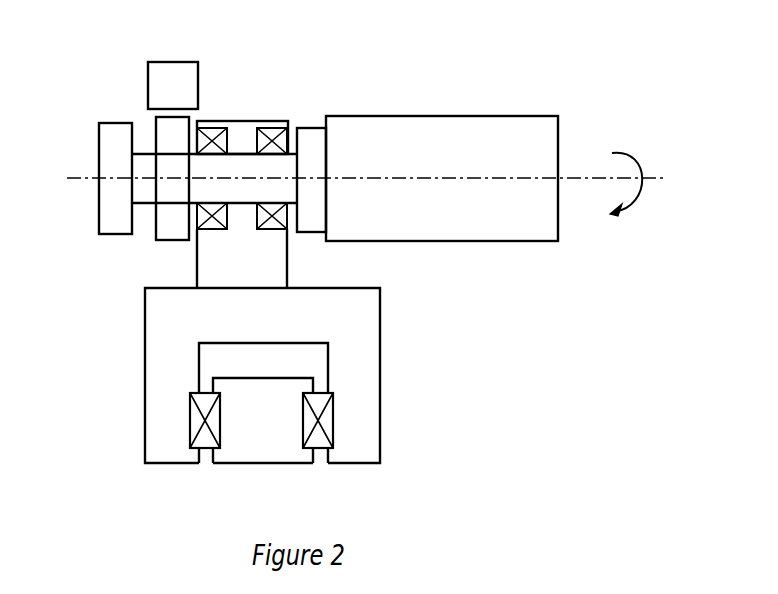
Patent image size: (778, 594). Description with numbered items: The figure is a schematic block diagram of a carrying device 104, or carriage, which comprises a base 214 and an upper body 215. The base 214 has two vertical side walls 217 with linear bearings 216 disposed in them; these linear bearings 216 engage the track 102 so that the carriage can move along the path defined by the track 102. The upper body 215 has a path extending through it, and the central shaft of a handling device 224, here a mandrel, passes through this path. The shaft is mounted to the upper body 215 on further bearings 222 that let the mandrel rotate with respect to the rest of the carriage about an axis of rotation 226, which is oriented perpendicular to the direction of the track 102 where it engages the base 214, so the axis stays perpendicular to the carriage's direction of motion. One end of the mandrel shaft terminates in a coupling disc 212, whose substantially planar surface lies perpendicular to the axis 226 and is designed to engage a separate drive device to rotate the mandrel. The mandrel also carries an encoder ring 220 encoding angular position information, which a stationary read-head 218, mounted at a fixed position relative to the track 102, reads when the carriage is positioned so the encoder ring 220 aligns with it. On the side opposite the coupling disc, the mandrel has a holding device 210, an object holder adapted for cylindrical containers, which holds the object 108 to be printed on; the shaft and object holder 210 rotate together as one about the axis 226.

The track 102 is at (266, 463).
The carrying device 104 is at (441, 304).
The object 108 is at (467, 122).
The object holder 210 is at (312, 140).
The coupling disc 212 is at (99, 143).
The base 214 is at (145, 328).
The upper body 215 is at (196, 257).
The linear bearings 216 is at (192, 415).
The vertical side walls 217 is at (145, 380).
The read-head 218 is at (173, 62).
The encoder ring 220 is at (167, 128).
The further bearings 222 is at (276, 224).
The handling device 224 is at (237, 168).
The axis of rotation 226 is at (578, 176).